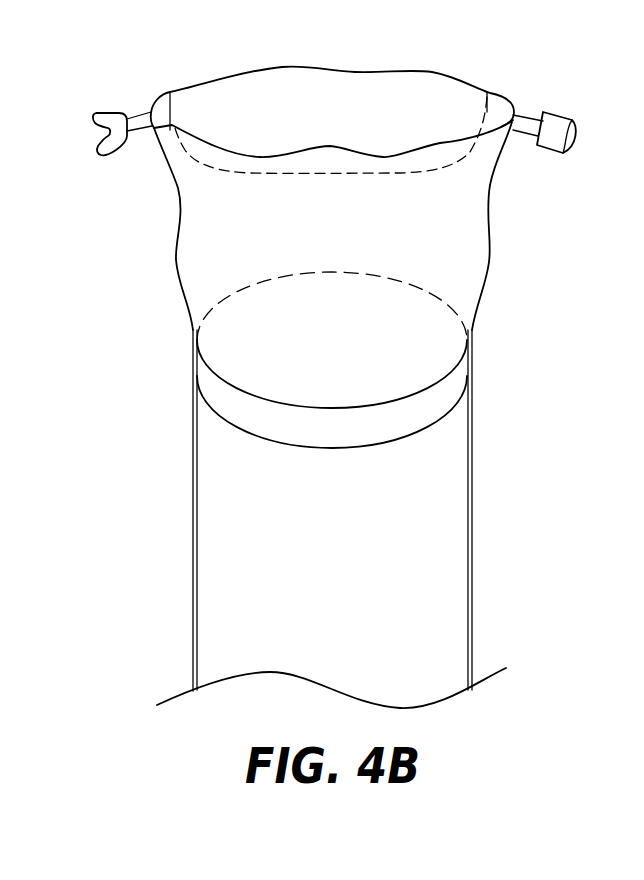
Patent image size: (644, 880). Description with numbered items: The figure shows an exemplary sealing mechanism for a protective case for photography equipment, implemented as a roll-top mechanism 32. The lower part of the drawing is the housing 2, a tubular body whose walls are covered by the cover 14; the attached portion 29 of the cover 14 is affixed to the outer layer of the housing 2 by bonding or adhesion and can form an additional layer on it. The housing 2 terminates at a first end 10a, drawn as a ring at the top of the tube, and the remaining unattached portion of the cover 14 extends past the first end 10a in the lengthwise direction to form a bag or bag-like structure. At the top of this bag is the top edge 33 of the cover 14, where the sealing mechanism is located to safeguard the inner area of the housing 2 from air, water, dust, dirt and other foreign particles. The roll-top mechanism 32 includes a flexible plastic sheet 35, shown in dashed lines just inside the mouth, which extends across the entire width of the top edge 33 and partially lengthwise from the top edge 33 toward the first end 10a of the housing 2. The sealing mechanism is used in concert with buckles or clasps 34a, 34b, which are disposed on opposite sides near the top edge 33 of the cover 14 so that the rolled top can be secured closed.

The housing 2 is at (440, 555).
The first end 10a is at (410, 362).
The cover 14 is at (473, 462).
The attached portion 29 is at (195, 505).
The roll-top mechanism 32 is at (234, 108).
The top edge 33 is at (428, 72).
The buckle 34a is at (108, 112).
The buckle 34b is at (558, 110).
The flexible plastic sheet 35 is at (245, 175).